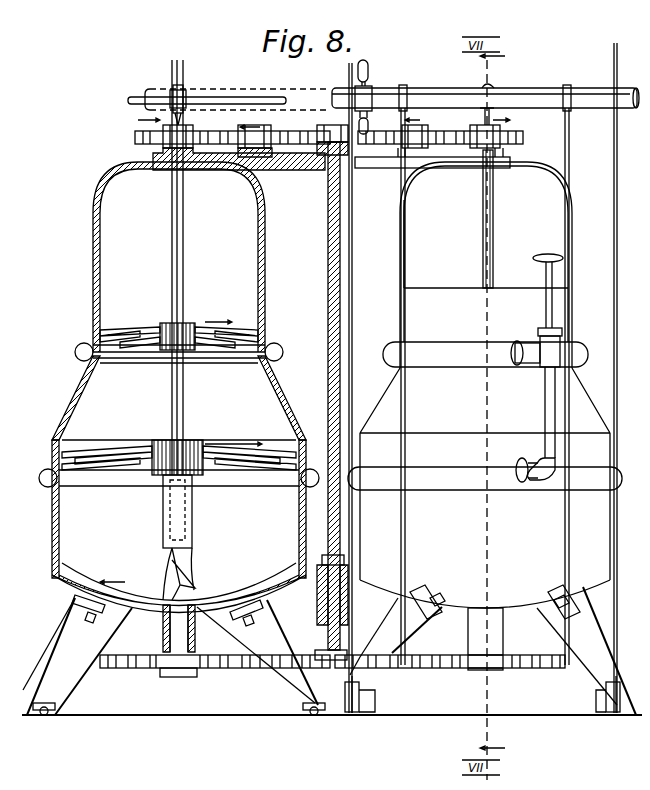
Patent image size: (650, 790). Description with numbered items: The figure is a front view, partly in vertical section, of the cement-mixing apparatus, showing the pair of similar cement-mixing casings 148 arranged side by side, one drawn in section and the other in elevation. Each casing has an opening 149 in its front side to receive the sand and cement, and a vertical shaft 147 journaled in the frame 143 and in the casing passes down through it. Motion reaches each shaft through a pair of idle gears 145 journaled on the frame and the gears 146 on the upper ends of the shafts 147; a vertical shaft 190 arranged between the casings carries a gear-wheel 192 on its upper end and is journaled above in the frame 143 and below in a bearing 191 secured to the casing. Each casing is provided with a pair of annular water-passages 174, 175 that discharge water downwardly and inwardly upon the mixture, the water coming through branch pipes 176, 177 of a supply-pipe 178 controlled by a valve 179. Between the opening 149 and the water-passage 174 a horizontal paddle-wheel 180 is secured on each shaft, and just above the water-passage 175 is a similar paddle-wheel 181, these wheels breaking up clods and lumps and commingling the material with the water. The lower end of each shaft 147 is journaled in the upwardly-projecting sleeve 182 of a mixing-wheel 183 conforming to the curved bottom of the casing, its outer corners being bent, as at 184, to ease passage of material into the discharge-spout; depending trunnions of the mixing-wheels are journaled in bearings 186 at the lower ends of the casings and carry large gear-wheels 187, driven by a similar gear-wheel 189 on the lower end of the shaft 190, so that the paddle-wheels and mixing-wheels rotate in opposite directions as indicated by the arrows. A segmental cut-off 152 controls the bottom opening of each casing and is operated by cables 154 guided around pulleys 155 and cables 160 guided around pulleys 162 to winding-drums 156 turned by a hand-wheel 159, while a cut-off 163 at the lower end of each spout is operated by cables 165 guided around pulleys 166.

The frame 143 is at (150, 157).
The idle gears 145 is at (232, 134).
The gears 146 is at (140, 137).
The vertical shafts 147 is at (172, 228).
The cement-mixing casings 148 is at (96, 236).
The openings 149 is at (427, 244).
The cut-off 152 is at (73, 600).
The cables 154 is at (401, 292).
The pulleys 155 is at (399, 598).
The winding-drums 156 is at (226, 96).
The hand-wheel 159 is at (349, 70).
The cables 160 is at (181, 86).
The pulleys 162 is at (174, 86).
The cut-off 163 is at (52, 718).
The cables 165 is at (352, 318).
The pulleys 166 is at (353, 713).
The annular water-passage 174 is at (82, 356).
The annular water-passage 175 is at (46, 480).
The branch pipe 176 is at (528, 345).
The branch pipe 177 is at (533, 460).
The supply-pipe 178 is at (546, 364).
The valve 179 is at (546, 302).
The paddle-wheel 180 is at (128, 336).
The paddle-wheel 181 is at (125, 450).
The sleeves 182 is at (163, 513).
The mixing-wheels 183 is at (179, 574).
The bent outer corners 184 is at (192, 580).
The bearings 186 is at (163, 637).
The gear-wheels 187 is at (140, 668).
The gear-wheel 189 is at (302, 668).
The vertical shaft 190 is at (327, 335).
The bearing 191 is at (317, 608).
The gear-wheel 192 is at (328, 127).